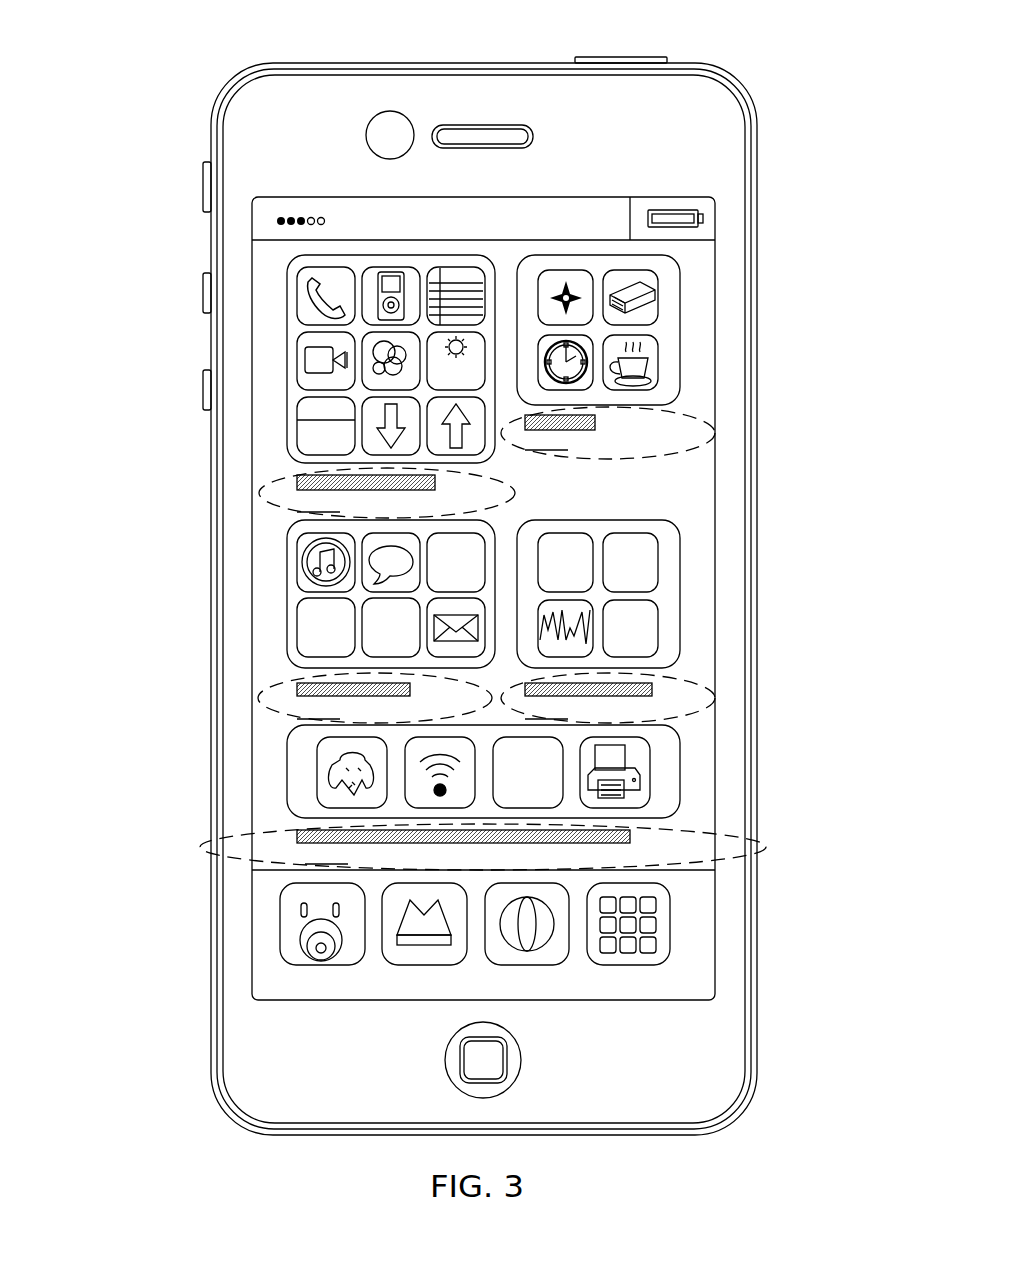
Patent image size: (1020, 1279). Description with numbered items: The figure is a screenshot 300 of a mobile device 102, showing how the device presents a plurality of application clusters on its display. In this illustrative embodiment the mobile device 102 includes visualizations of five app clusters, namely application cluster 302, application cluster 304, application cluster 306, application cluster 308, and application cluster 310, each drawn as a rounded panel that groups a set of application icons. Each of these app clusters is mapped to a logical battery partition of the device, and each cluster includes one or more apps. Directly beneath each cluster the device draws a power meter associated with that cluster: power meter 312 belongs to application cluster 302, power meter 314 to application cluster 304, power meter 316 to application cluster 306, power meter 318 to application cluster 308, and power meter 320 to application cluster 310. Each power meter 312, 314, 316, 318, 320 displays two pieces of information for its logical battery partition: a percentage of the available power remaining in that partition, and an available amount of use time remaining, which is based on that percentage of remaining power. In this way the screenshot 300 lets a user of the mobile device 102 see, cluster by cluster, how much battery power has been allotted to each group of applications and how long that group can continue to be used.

The screenshot 300 is at (756, 65).
The mobile device 102 is at (752, 123).
The application cluster 302 is at (287, 352).
The application cluster 304 is at (680, 307).
The application cluster 306 is at (287, 562).
The application cluster 308 is at (680, 562).
The application cluster 310 is at (680, 786).
The power meter 312 is at (282, 482).
The power meter 314 is at (683, 415).
The power meter 316 is at (258, 697).
The power meter 318 is at (715, 690).
The power meter 320 is at (733, 858).